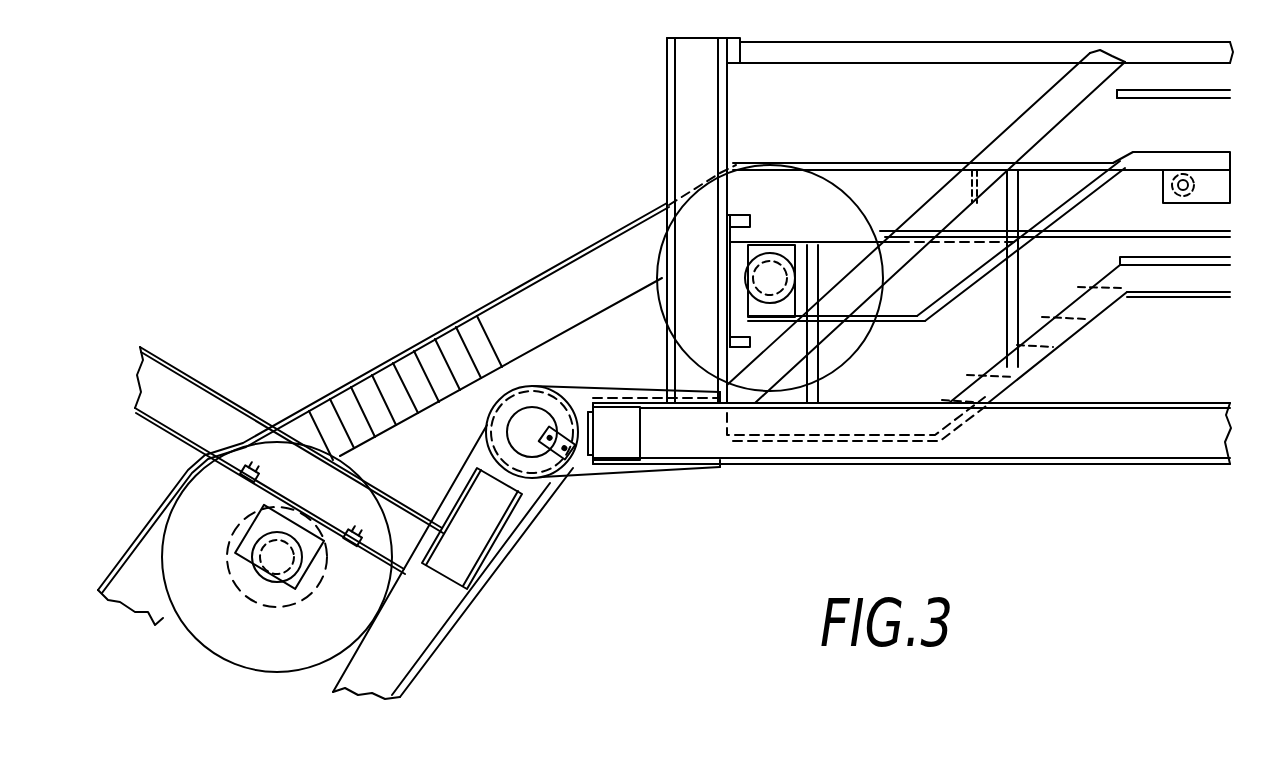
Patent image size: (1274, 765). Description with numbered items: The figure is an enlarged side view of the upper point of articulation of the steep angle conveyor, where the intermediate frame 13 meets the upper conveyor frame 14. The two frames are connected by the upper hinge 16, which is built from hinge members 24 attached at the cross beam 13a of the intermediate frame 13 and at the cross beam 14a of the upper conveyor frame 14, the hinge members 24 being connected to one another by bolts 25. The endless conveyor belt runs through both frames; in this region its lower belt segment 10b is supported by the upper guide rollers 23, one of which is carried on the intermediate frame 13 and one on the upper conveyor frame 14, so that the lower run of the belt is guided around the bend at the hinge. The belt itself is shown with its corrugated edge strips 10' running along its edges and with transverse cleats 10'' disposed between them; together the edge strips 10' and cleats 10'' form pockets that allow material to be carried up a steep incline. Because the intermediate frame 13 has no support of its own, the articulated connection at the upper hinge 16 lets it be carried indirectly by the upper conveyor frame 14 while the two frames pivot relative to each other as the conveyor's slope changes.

The lower belt segment 10b is at (330, 368).
The corrugated edge strips 10' is at (405, 367).
The transverse cleats 10'' is at (950, 220).
The intermediate frame 13 is at (470, 630).
The cross beam 13a is at (400, 658).
The upper conveyor frame 14 is at (1094, 482).
The cross beam 14a is at (874, 447).
The upper hinge 16 is at (513, 365).
The upper guide rollers 23 is at (240, 647).
The hinge members 24 is at (482, 567).
The bolts 25 is at (542, 452).